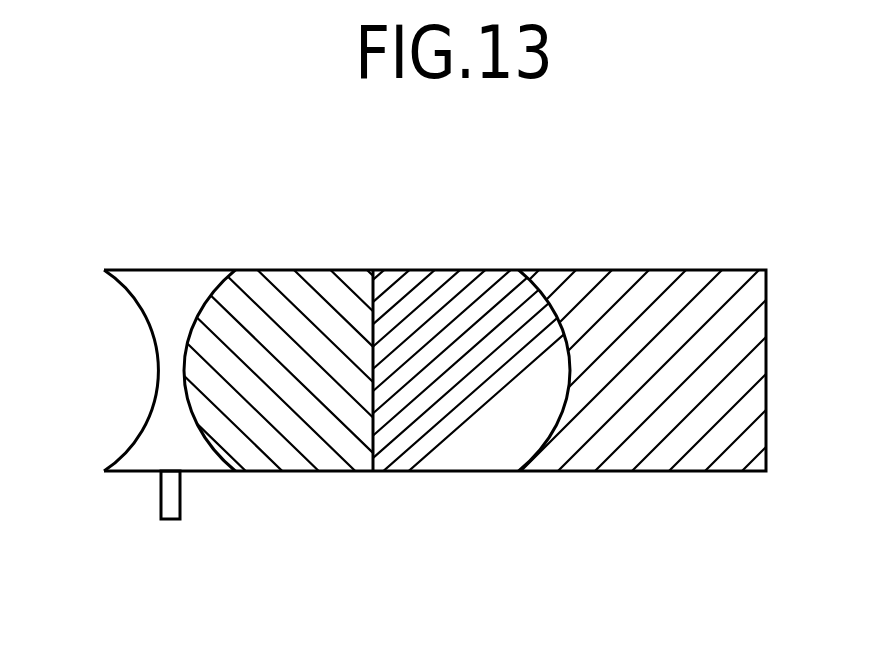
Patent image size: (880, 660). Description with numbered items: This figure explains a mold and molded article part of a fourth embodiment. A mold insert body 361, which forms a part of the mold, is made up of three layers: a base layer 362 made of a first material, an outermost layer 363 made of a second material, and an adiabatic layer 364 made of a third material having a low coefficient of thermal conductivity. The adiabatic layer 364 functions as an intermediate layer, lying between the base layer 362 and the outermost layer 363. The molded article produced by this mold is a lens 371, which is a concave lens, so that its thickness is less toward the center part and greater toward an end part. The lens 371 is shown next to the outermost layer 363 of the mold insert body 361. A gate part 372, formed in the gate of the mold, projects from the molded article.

The mold insert body 361 is at (125, 155).
The base layer 362 is at (638, 269).
The outermost layer 363 is at (274, 269).
The adiabatic layer 364 is at (420, 269).
The lens 371 is at (177, 269).
The gate part 372 is at (160, 496).